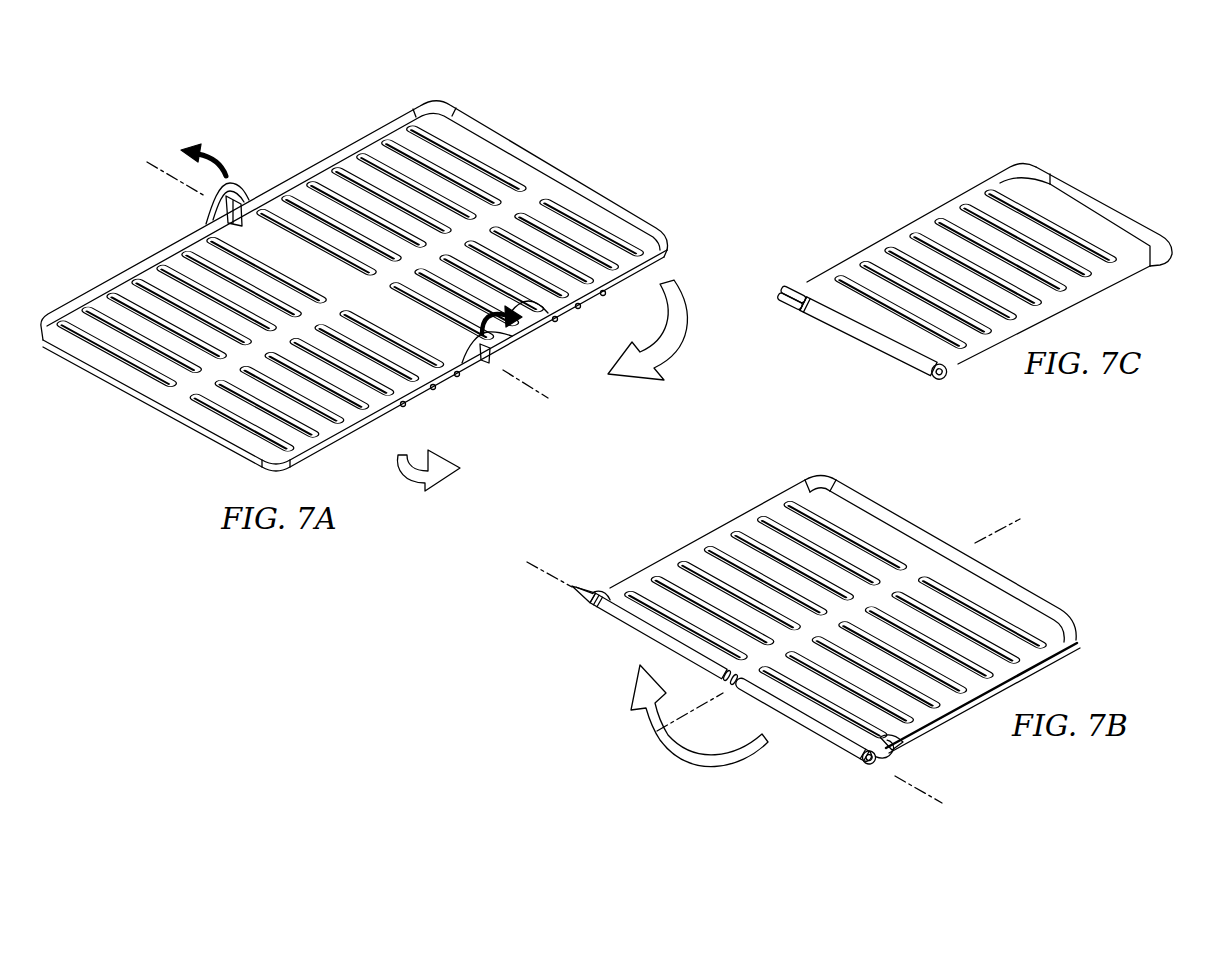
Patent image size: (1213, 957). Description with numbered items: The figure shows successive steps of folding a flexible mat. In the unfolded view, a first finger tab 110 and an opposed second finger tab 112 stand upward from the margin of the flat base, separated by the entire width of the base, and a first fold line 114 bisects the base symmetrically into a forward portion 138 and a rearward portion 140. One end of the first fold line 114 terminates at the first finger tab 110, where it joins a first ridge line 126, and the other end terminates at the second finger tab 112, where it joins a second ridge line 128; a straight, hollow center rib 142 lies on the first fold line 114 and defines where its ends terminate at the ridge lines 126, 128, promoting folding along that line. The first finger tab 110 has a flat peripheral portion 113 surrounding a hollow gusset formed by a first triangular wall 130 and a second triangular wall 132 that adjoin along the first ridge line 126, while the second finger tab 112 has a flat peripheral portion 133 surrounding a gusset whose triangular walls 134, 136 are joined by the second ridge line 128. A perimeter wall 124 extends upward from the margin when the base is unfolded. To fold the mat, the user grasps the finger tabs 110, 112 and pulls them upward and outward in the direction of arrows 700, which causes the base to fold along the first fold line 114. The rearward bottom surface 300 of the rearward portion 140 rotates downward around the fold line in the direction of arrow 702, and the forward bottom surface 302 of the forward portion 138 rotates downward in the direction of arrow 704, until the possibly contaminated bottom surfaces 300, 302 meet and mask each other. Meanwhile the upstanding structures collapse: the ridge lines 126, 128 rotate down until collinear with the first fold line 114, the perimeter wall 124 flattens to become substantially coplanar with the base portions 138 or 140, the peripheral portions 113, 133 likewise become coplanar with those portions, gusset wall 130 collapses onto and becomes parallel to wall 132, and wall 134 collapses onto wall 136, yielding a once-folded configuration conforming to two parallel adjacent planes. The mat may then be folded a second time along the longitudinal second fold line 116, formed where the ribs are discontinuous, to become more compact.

In FIG. 7A, the first finger tab 110 is at (244, 192).
In FIG. 7B, the first finger tab 110 is at (577, 583).
In FIG. 7A, the second finger tab 112 is at (482, 362).
In FIG. 7B, the second finger tab 112 is at (903, 755).
In FIG. 7B, the peripheral portion 113 is at (608, 586).
In FIG. 7A, the first fold line 114 is at (547, 395).
In FIG. 7B, the first fold line 114 is at (528, 565).
In FIG. 7B, the second fold line 116 is at (1008, 522).
In FIG. 7C, the second fold line 116 is at (1107, 285).
In FIG. 7B, the perimeter wall 124 is at (818, 484).
In FIG. 7C, the perimeter wall 124 is at (953, 206).
In FIG. 7B, the first ridge line 126 is at (583, 600).
In FIG. 7B, the second ridge line 128 is at (878, 768).
In FIG. 7A, the first substantially triangular wall 130 is at (228, 216).
In FIG. 7B, the second substantially triangular wall 132 is at (603, 586).
In FIG. 7B, the peripheral portion 133 is at (914, 780).
In FIG. 7C, the peripheral portion 133 is at (805, 284).
In FIG. 7B, the first substantially triangular wall 134 is at (906, 739).
In FIG. 7C, the second substantially triangular wall 136 is at (785, 276).
In FIG. 7A, the forward portion 138 is at (180, 405).
In FIG. 7A, the rearward portion 140 is at (554, 196).
In FIG. 7B, the rearward portion 140 is at (887, 537).
In FIG. 7B, the center rib 142 is at (645, 628).
In FIG. 7C, the center rib 142 is at (858, 320).
In FIG. 7A, the rearward bottom surface 300 is at (617, 282).
In FIG. 7A, the forward bottom surface 302 is at (370, 444).
In FIG. 7A, the arrows 700 is at (223, 172).
In FIG. 7A, the arrow 702 is at (664, 356).
In FIG. 7A, the arrow 704 is at (425, 490).